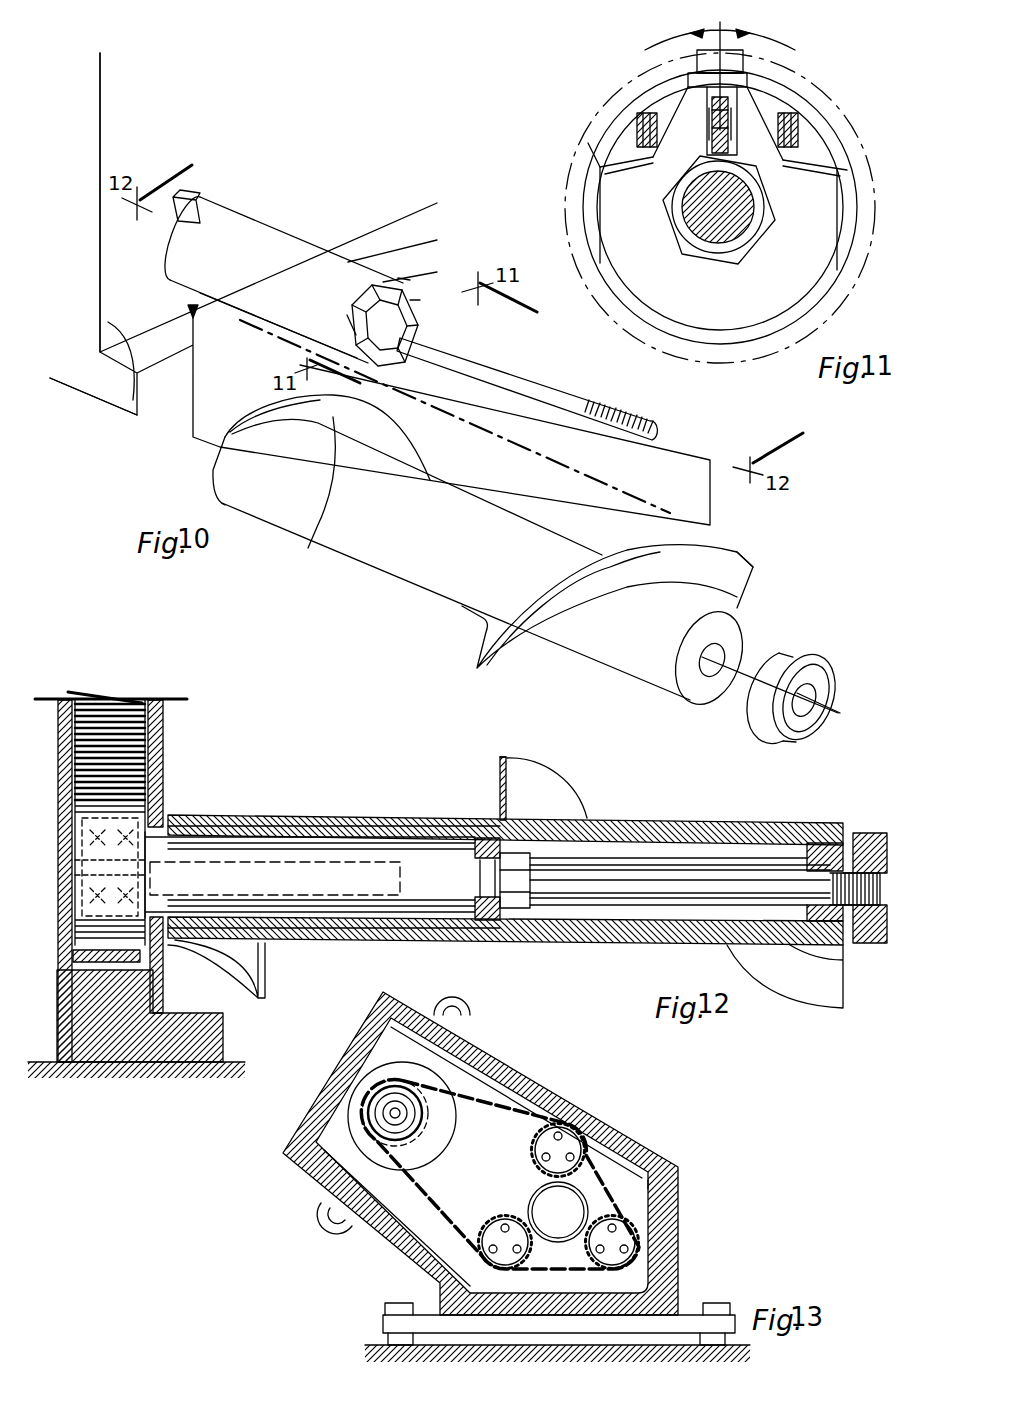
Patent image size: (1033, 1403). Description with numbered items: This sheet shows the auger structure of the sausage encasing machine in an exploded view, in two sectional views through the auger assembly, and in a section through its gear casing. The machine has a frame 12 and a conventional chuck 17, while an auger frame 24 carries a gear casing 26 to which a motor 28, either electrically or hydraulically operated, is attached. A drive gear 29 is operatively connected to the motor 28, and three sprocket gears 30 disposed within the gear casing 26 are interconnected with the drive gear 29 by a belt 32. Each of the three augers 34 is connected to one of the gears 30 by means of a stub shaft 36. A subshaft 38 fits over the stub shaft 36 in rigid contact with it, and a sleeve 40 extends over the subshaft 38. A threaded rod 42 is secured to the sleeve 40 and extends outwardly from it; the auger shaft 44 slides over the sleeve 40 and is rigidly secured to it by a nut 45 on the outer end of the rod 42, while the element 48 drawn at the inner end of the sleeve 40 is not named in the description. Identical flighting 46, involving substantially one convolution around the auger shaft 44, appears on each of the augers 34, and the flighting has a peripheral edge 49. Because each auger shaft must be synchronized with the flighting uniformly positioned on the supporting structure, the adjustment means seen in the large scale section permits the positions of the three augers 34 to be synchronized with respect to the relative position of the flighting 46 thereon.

In FIG. 12, the frame 12 is at (230, 1062).
In FIG. 13, the frame 12 is at (377, 1345).
In FIG. 13, the chuck 17 is at (600, 1142).
In FIG. 10, the auger frame 24 is at (108, 410).
In FIG. 12, the auger frame 24 is at (225, 1035).
In FIG. 13, the auger frame 24 is at (427, 1297).
In FIG. 10, the gear casing 26 is at (125, 420).
In FIG. 12, the gear casing 26 is at (163, 763).
In FIG. 13, the gear casing 26 is at (437, 1265).
In FIG. 13, the motor 28 is at (380, 1090).
In FIG. 13, the drive gear 29 is at (370, 1108).
In FIG. 12, the sprocket gears 30 is at (130, 792).
In FIG. 13, the sprocket gears 30 is at (573, 1123).
In FIG. 12, the belt 32 is at (130, 740).
In FIG. 13, the belt 32 is at (640, 1215).
In FIG. 10, the augers 34 is at (328, 572).
In FIG. 12, the augers 34 is at (698, 805).
In FIG. 12, the stub shaft 36 is at (303, 840).
In FIG. 11, the subshaft 38 is at (625, 125).
In FIG. 12, the subshaft 38 is at (352, 860).
In FIG. 10, the sleeve 40 is at (355, 263).
In FIG. 11, the sleeve 40 is at (620, 135).
In FIG. 12, the sleeve 40 is at (393, 817).
In FIG. 10, the threaded rod 42 is at (535, 373).
In FIG. 11, the threaded rod 42 is at (683, 193).
In FIG. 12, the threaded rod 42 is at (663, 877).
In FIG. 10, the auger shaft 44 is at (430, 580).
In FIG. 11, the auger shaft 44 is at (588, 143).
In FIG. 12, the auger shaft 44 is at (710, 823).
In FIG. 10, the nut 45 is at (783, 652).
In FIG. 12, the nut 45 is at (870, 833).
In FIG. 10, the flighting 46 is at (308, 548).
In FIG. 12, the flighting 46 is at (533, 775).
In FIG. 10, the adjusting nut 48 is at (412, 285).
In FIG. 11, the adjusting nut 48 is at (783, 63).
In FIG. 12, the adjusting nut 48 is at (474, 838).
In FIG. 10, the peripheral edge 49 is at (745, 552).
In FIG. 12, the peripheral edge 49 is at (503, 757).